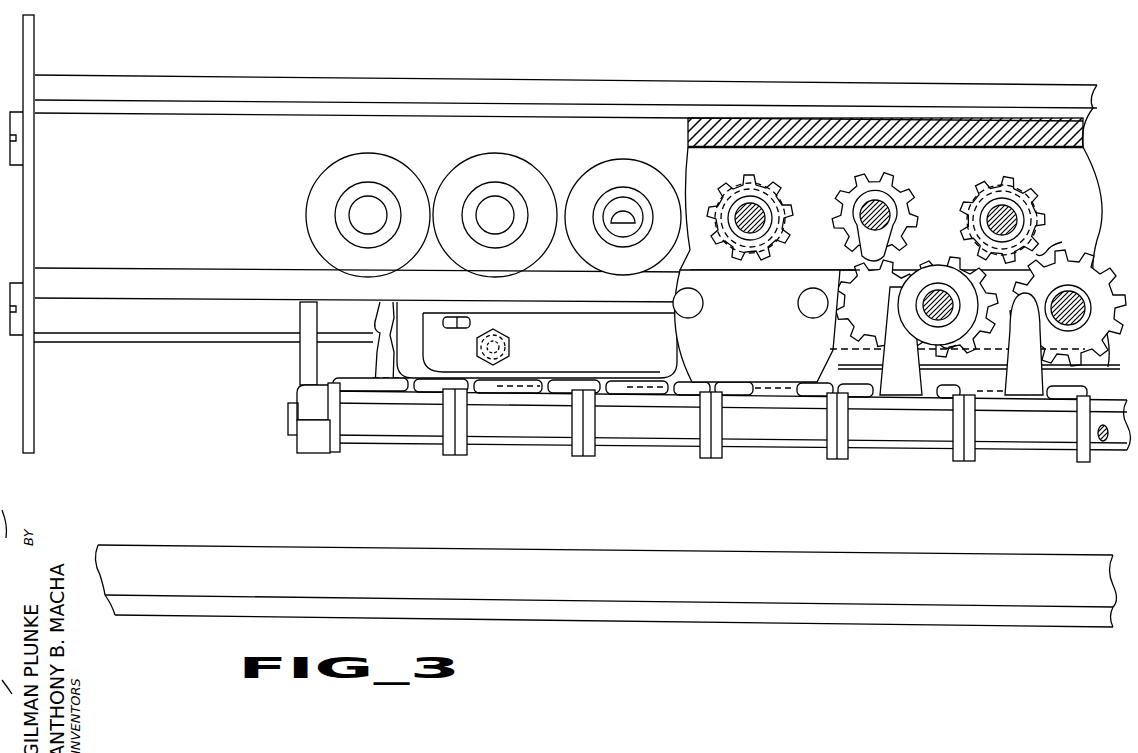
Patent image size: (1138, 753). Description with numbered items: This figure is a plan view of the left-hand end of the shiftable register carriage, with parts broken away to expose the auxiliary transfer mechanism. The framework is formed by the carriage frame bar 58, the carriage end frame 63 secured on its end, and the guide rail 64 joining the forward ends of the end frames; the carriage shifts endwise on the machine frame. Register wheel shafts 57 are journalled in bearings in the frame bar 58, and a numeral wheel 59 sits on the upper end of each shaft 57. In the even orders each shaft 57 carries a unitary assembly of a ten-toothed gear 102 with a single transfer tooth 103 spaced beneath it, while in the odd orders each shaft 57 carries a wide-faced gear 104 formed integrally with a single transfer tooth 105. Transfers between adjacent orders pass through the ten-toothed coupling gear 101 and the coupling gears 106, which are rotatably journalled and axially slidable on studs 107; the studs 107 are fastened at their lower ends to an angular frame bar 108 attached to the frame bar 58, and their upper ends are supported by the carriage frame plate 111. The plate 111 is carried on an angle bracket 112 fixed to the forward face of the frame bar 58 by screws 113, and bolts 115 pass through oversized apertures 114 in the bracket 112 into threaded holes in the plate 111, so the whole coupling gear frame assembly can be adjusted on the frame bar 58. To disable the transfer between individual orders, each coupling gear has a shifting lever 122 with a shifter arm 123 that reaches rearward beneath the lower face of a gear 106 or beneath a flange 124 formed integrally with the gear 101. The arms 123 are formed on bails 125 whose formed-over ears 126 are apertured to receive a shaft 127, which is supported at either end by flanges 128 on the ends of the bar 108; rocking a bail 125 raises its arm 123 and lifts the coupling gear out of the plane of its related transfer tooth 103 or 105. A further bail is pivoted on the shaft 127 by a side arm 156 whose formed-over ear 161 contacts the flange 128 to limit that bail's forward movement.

The register wheel shaft 57 is at (1008, 217).
The carriage frame bar 58 is at (468, 77).
The numeral wheel 59 is at (616, 172).
The carriage end frame 63 is at (34, 228).
The guide rail 64 is at (664, 577).
The coupling gear 101 is at (935, 362).
The ten-toothed gear 102 is at (1024, 190).
The transfer tooth 103 is at (1034, 284).
The wide-faced gear 104 is at (892, 184).
The transfer tooth 105 is at (848, 270).
The coupling gear 106 is at (1062, 244).
The stud 107 is at (800, 310).
The frame bar 108 is at (1082, 370).
The carriage frame plate 111 is at (740, 363).
The angle bracket 112 is at (568, 368).
The screw 113 is at (465, 318).
The aperture 114 is at (477, 351).
The bolt 115 is at (509, 340).
The shifting lever 122 is at (683, 380).
The shifter arm 123 is at (884, 383).
The flange 124 is at (949, 346).
The bail 125 is at (1062, 398).
The formed-over ear 126 is at (1083, 458).
The shaft 127 is at (748, 430).
The flange 128 is at (300, 360).
The side arm 156 is at (320, 454).
The formed-over ear 161 is at (300, 395).